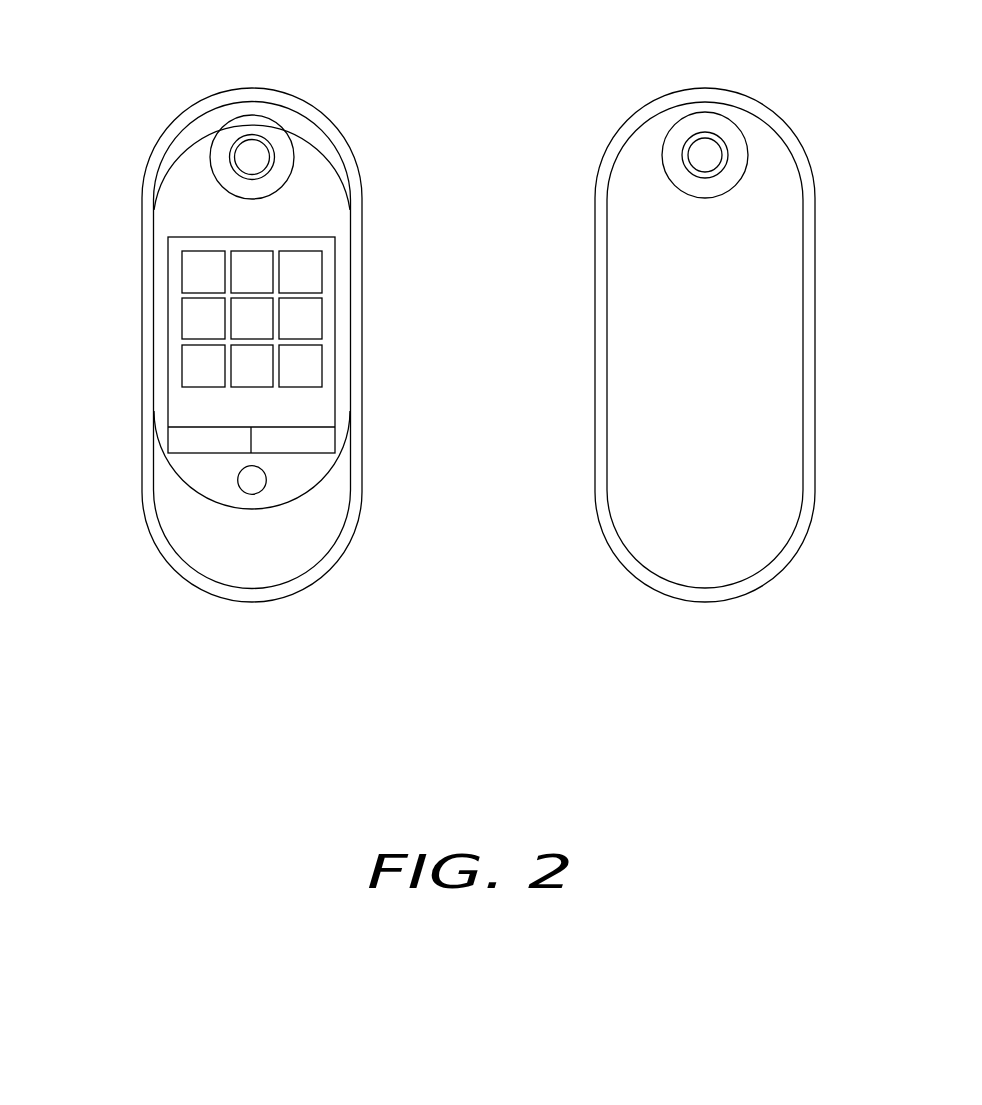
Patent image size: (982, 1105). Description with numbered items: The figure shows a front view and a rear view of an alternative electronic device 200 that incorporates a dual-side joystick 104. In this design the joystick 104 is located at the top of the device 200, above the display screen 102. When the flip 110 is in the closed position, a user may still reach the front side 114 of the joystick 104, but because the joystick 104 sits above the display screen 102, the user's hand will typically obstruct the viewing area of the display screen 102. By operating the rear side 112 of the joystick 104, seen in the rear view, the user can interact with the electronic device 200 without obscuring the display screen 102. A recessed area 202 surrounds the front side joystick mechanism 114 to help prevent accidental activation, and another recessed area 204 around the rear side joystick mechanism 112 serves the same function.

The electronic device 200 is at (497, 770).
The display screen 102 is at (197, 319).
The joystick 104 is at (228, 130).
The flip 110 is at (205, 515).
The rear side of the joystick 112 is at (710, 150).
The front side of the joystick 114 is at (258, 157).
The recessed area 202 is at (262, 135).
The recessed area 204 is at (683, 142).